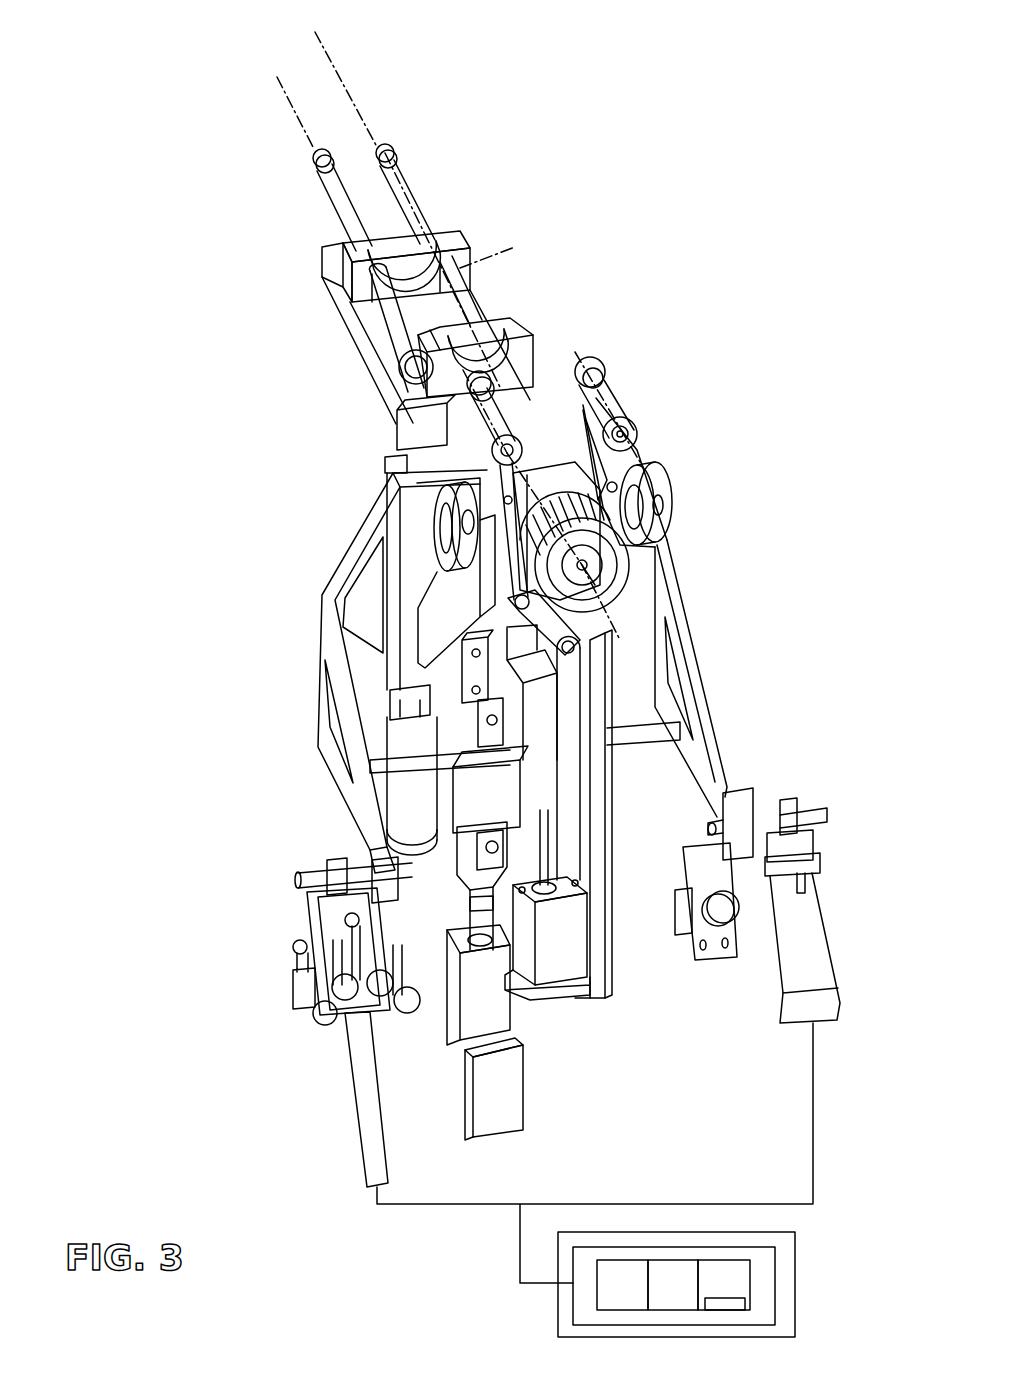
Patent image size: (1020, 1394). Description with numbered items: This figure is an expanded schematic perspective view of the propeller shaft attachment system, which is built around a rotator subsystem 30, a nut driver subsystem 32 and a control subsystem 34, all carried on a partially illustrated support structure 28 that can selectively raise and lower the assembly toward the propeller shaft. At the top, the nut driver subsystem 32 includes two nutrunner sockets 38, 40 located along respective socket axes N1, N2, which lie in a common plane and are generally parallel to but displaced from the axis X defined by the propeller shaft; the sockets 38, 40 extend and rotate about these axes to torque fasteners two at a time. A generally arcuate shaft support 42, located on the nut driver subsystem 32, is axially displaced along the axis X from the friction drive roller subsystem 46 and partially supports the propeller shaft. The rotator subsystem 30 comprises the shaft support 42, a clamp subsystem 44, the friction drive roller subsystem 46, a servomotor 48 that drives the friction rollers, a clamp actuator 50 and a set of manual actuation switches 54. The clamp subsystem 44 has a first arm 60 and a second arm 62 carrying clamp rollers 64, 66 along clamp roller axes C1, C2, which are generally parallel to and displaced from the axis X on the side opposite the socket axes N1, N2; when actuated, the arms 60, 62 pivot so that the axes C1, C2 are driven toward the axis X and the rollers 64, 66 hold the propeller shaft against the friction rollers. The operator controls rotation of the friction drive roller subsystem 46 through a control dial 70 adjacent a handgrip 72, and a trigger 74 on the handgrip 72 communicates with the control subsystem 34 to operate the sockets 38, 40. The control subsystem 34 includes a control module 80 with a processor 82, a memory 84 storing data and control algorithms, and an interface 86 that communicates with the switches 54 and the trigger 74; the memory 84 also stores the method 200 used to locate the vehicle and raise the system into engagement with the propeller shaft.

The socket axis N1 is at (293, 113).
The socket axis N2 is at (375, 128).
The axis X is at (454, 270).
The nutrunner socket 38 is at (311, 166).
The nutrunner socket 40 is at (395, 149).
The nut driver subsystem 32 is at (480, 228).
The shaft support 42 is at (522, 330).
The clamp roller axis C1 is at (506, 385).
The clamp roller axis C2 is at (613, 393).
The clamp subsystem 44 is at (628, 408).
The clamp roller 66 is at (633, 442).
The clamp roller 64 is at (505, 452).
The second arm 62 is at (608, 500).
The first arm 60 is at (513, 582).
The friction drive roller subsystem 46 is at (648, 561).
The rotator subsystem 30 is at (745, 360).
The servomotor 48 is at (540, 720).
The clamp actuator 50 is at (600, 781).
The support structure 28 is at (532, 1088).
The control dial 70 is at (710, 913).
The control subsystem 34 is at (800, 775).
The trigger 74 is at (797, 893).
The handgrip 72 is at (828, 1022).
The manual actuation switches 54 is at (296, 1012).
The control module 80 is at (780, 1265).
The interface 86 is at (622, 1285).
The processor 82 is at (673, 1285).
The memory 84 is at (724, 1285).
The method 200 is at (745, 1305).